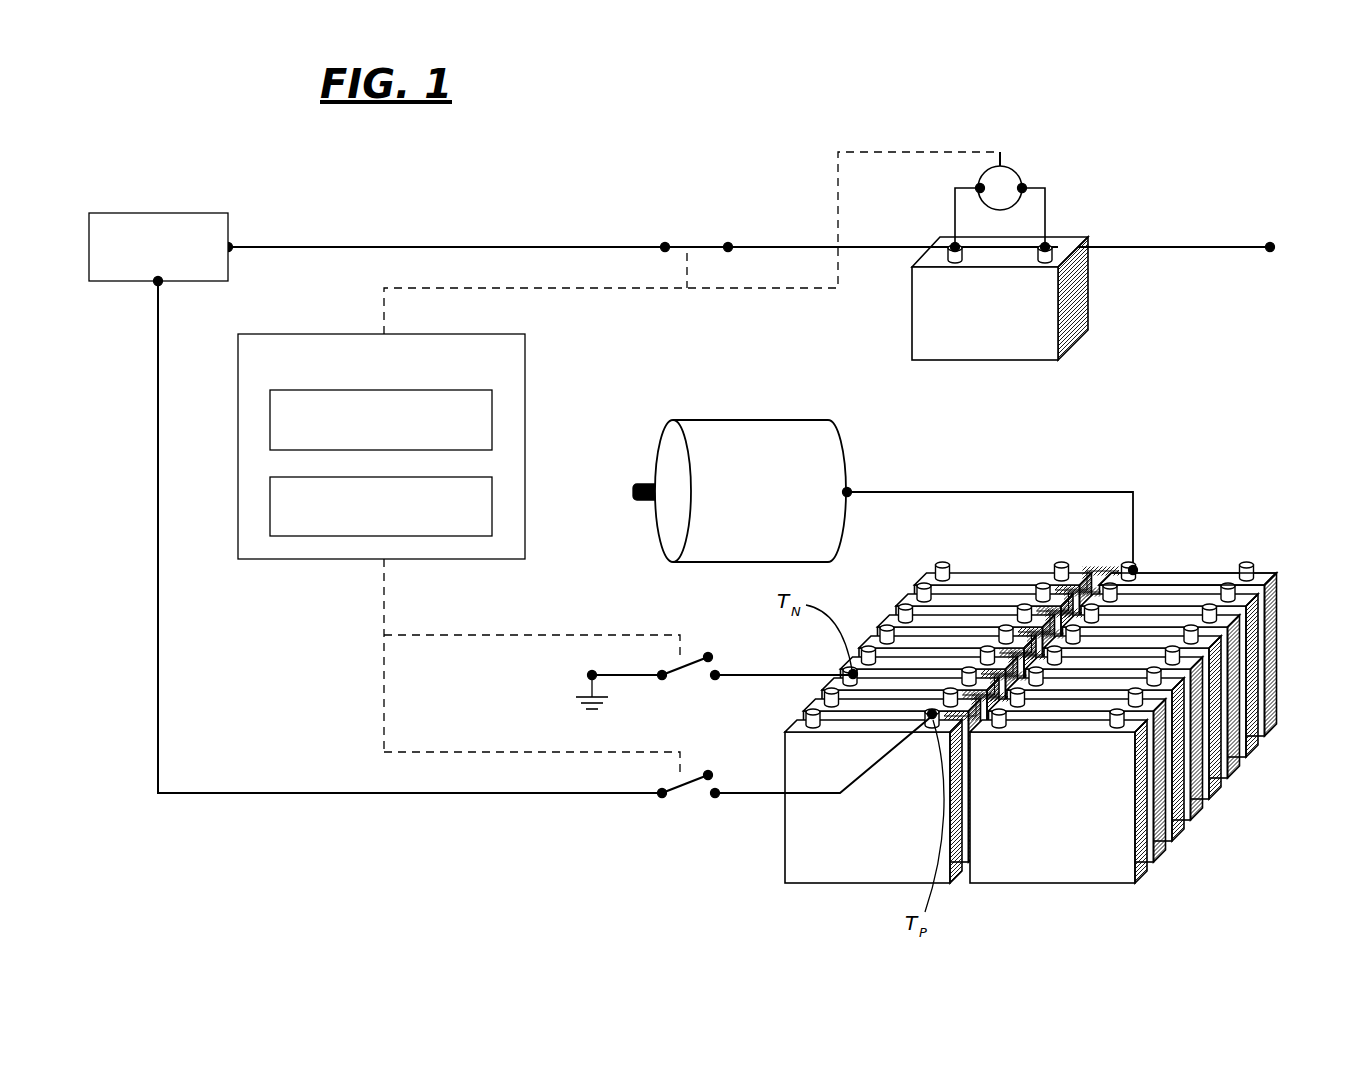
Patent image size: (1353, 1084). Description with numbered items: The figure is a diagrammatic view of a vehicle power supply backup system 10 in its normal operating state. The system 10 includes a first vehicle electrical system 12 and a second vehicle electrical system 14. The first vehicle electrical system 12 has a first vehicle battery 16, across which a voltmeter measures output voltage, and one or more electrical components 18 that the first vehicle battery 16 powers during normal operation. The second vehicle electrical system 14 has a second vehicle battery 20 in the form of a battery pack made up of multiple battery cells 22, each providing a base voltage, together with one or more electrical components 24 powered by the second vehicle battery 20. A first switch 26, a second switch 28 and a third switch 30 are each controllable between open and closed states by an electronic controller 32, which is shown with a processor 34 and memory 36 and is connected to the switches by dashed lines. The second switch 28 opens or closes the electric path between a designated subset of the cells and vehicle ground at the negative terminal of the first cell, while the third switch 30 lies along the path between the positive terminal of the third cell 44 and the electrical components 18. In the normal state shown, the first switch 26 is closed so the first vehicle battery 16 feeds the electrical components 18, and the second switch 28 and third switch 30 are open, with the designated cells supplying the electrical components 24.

The vehicle power supply backup system 10 is at (566, 110).
The first vehicle electrical system 12 is at (664, 149).
The second vehicle electrical system 14 is at (1139, 446).
The first vehicle battery 16 is at (1000, 256).
The electrical components 18 is at (158, 249).
The second vehicle battery 20 is at (1031, 695).
The battery cells 22 is at (1284, 584).
The electrical components 24 is at (742, 491).
The first switch 26 is at (700, 245).
The second switch 28 is at (698, 655).
The third switch 30 is at (698, 773).
The electronic controller 32 is at (619, 465).
The processor 34 is at (381, 420).
The memory 36 is at (381, 506).
The third cell 44 is at (966, 796).